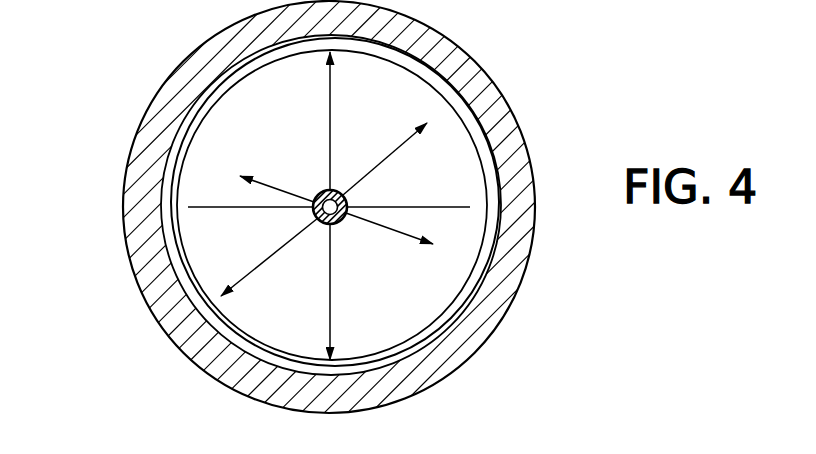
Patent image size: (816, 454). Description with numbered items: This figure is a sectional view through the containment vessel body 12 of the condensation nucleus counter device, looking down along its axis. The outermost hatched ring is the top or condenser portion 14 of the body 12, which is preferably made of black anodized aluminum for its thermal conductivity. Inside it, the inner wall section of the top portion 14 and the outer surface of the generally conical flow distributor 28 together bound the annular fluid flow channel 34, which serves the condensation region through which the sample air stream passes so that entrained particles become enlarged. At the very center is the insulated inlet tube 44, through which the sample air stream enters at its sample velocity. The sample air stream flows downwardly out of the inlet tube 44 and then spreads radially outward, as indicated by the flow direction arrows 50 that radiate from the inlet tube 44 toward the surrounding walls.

The containment vessel body 12 is at (134, 71).
The top or condenser portion 14 is at (473, 72).
The annular fluid flow channel 34 is at (483, 140).
The flow distributor 28 is at (422, 295).
The insulated inlet tube 44 is at (350, 198).
The flow direction arrows 50 is at (328, 170).